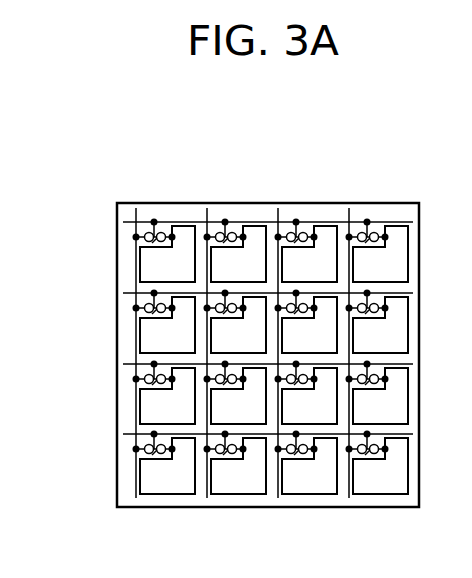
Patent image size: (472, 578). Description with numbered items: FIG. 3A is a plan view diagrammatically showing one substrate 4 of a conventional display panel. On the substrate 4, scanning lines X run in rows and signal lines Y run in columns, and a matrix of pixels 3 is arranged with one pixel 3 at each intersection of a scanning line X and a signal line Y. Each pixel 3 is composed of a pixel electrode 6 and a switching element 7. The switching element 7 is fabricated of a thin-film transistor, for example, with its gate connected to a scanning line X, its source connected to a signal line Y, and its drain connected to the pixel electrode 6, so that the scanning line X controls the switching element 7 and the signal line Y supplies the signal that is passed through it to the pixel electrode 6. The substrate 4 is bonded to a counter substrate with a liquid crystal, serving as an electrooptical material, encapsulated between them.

The pixel 3 is at (227, 320).
The substrate 4 is at (384, 203).
The pixel electrode 6 is at (185, 238).
The switching element 7 is at (168, 205).
The scanning line X is at (130, 223).
The signal line Y is at (137, 212).